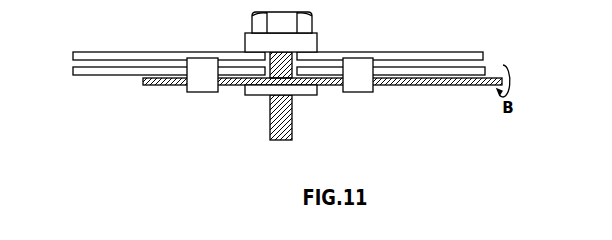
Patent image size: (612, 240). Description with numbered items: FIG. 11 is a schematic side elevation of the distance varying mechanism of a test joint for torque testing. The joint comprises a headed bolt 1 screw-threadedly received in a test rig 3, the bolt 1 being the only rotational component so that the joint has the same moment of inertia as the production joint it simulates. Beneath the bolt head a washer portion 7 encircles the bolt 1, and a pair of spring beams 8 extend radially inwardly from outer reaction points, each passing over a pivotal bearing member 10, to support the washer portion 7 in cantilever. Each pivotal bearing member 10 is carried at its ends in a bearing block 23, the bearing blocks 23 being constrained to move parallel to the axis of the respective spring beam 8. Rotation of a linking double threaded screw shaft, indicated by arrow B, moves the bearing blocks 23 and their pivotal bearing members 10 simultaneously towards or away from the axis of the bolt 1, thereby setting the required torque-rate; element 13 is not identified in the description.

The headed bolt 1 is at (275, 131).
The test rig 3 is at (299, 92).
The washer portion 7 is at (310, 40).
The spring beam 8 is at (118, 55).
The pivotal bearing member 10 is at (212, 65).
The lower plate 13 is at (100, 71).
The bearing block 23 is at (203, 91).